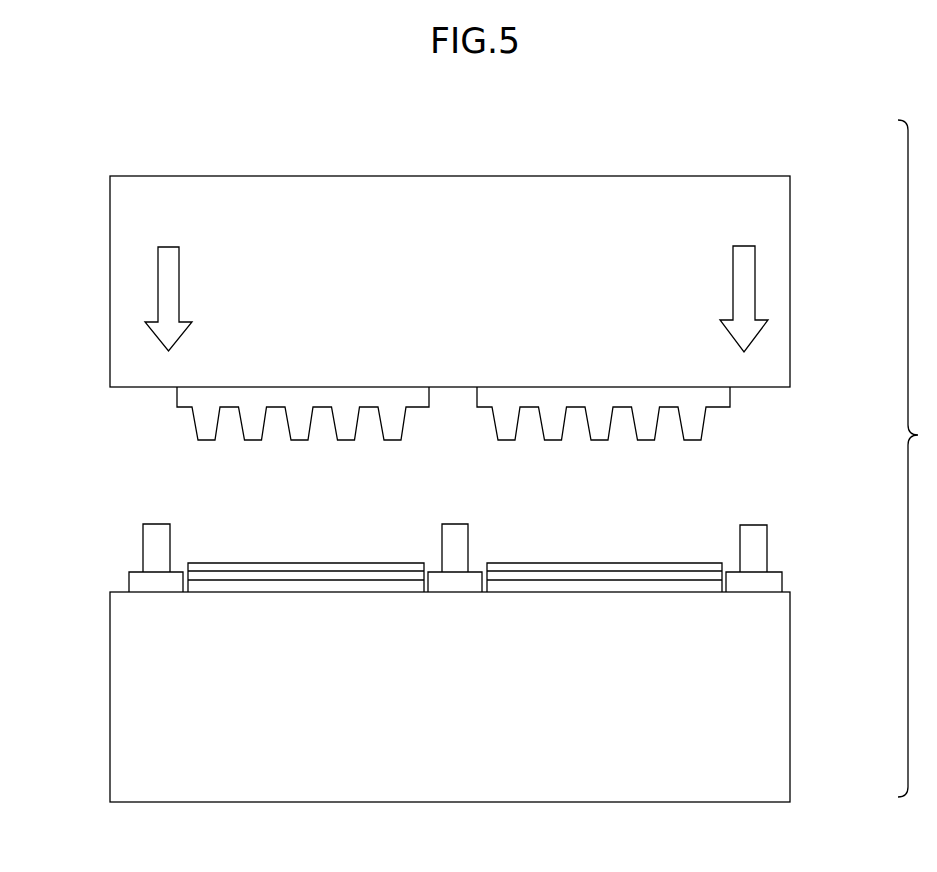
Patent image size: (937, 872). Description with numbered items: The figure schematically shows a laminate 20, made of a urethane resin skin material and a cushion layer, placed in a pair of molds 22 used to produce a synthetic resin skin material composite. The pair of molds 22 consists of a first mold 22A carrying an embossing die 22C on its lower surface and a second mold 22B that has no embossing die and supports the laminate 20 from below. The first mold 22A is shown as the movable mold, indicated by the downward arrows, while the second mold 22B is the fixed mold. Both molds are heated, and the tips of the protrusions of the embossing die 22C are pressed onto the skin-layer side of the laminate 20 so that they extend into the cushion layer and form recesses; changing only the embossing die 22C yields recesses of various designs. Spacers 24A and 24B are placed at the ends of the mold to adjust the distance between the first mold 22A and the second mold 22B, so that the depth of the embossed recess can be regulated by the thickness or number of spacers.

The pair of molds 22 is at (733, 158).
The first mold 22A is at (776, 251).
The second mold 22B is at (752, 672).
The embossing die 22C is at (741, 417).
The laminate 20 is at (688, 562).
The spacer 24A is at (150, 544).
The spacer 24B is at (138, 583).